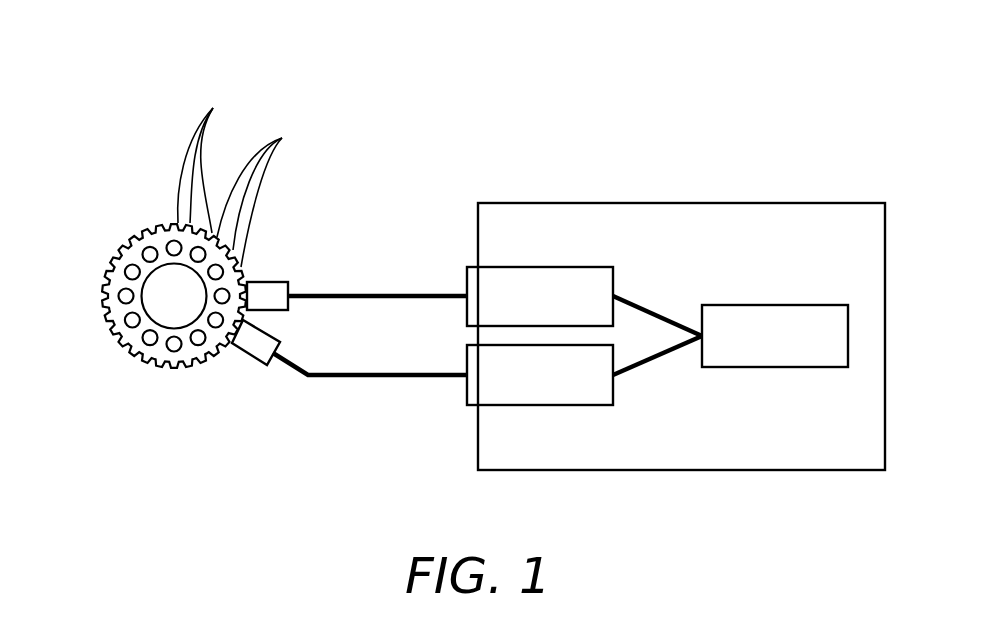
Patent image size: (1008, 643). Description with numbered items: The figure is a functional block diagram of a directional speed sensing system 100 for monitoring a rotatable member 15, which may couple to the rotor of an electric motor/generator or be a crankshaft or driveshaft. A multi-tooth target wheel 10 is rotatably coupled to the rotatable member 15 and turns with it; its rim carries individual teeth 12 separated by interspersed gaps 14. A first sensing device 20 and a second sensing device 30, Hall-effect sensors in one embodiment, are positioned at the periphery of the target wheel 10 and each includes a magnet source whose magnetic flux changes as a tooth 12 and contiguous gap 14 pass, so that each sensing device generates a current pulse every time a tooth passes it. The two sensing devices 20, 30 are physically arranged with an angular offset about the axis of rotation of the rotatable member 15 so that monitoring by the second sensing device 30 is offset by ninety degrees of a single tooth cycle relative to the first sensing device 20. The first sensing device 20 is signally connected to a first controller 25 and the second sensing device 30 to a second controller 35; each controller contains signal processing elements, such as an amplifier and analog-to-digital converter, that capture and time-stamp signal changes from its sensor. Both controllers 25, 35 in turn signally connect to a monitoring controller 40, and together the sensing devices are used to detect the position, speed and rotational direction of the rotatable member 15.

The directional speed sensing system 100 is at (403, 203).
The multi-tooth target wheel 10 is at (155, 229).
The teeth 12 is at (211, 164).
The gaps 14 is at (265, 197).
The rotatable member 15 is at (165, 290).
The first sensing device 20 is at (268, 296).
The first controller 25 is at (584, 301).
The second sensing device 30 is at (260, 348).
The second controller 35 is at (584, 370).
The monitoring controller 40 is at (775, 336).